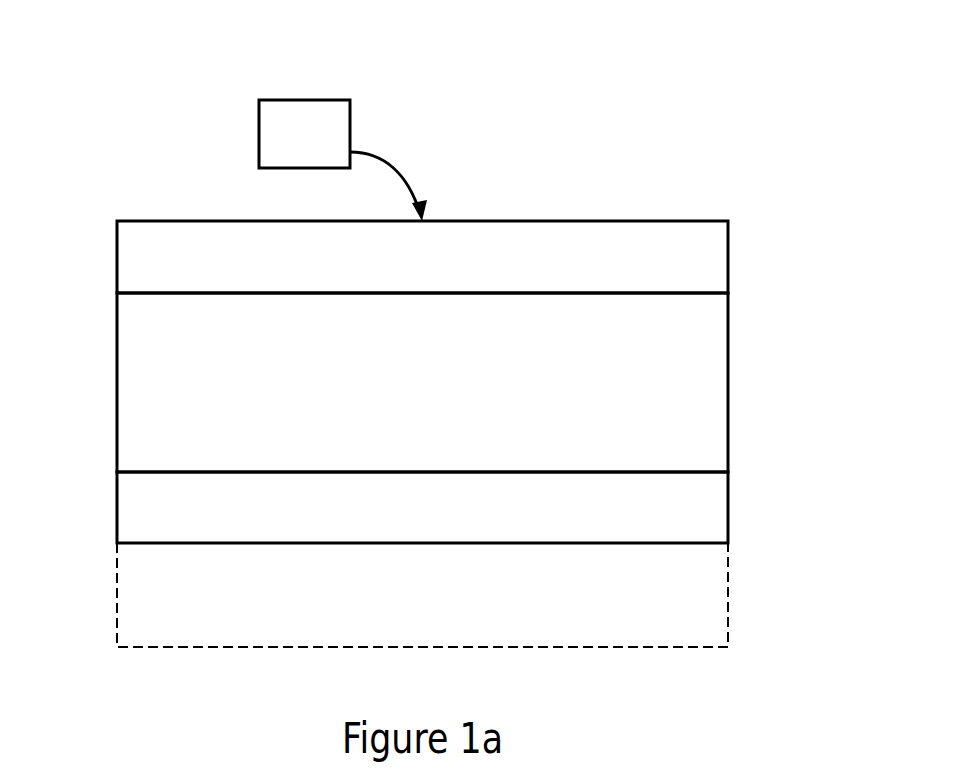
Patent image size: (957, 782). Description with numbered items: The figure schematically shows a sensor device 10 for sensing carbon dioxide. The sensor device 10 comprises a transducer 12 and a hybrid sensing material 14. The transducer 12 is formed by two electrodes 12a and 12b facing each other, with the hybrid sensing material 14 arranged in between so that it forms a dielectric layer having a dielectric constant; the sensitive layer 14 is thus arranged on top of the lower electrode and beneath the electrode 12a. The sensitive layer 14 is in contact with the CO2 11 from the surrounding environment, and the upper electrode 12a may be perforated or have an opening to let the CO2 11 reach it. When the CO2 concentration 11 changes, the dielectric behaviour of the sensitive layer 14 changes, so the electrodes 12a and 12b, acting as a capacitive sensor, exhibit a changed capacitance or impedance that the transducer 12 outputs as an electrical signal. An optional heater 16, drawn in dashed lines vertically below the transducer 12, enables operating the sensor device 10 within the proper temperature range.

The sensor device 10 is at (711, 172).
The CO2 concentration 11 is at (302, 100).
The transducer 12 is at (510, 382).
The electrode 12a is at (729, 255).
The electrode 12b is at (479, 507).
The hybrid sensing material 14 is at (117, 383).
The heater 16 is at (117, 599).